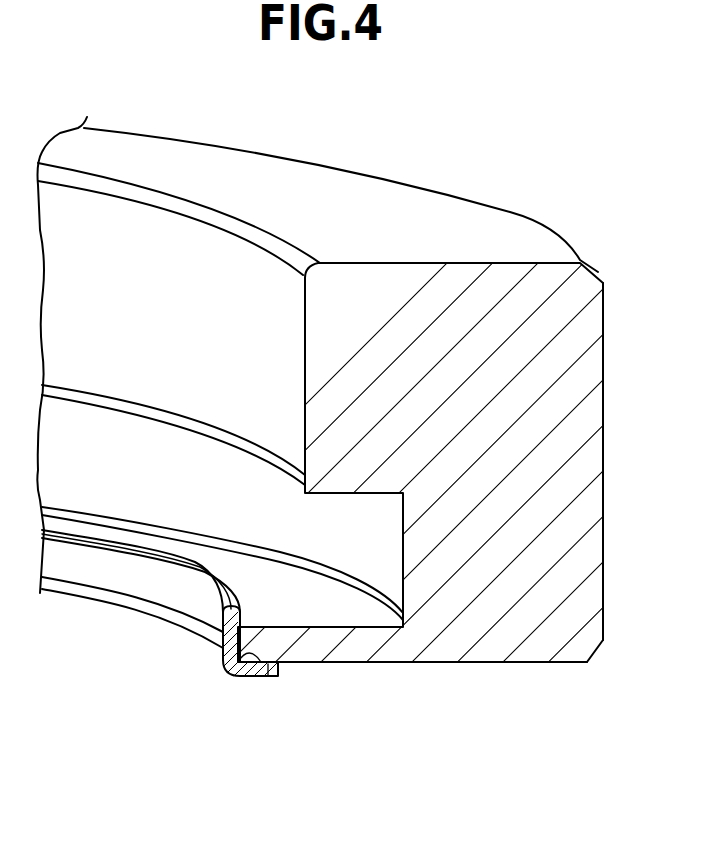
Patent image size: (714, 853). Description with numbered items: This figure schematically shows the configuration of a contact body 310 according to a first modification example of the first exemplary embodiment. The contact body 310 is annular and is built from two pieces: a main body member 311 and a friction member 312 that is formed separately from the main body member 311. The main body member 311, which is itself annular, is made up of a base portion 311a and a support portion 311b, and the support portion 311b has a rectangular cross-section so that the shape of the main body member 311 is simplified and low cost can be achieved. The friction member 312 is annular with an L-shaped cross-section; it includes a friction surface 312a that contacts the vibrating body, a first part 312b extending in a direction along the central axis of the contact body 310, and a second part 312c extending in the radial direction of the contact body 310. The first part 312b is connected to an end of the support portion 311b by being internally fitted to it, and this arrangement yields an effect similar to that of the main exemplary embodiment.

The contact body 310 is at (357, 485).
The main body member 311 is at (357, 467).
The base portion 311a is at (545, 645).
The support portion 311b is at (547, 743).
The friction member 312 is at (222, 639).
The friction surface 312a is at (262, 678).
The first part 312b is at (215, 626).
The second part 312c is at (224, 663).